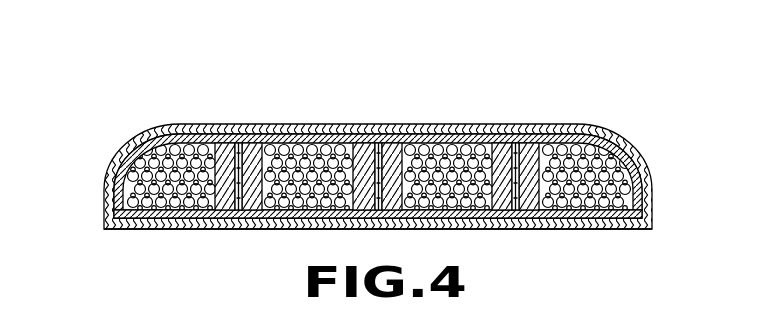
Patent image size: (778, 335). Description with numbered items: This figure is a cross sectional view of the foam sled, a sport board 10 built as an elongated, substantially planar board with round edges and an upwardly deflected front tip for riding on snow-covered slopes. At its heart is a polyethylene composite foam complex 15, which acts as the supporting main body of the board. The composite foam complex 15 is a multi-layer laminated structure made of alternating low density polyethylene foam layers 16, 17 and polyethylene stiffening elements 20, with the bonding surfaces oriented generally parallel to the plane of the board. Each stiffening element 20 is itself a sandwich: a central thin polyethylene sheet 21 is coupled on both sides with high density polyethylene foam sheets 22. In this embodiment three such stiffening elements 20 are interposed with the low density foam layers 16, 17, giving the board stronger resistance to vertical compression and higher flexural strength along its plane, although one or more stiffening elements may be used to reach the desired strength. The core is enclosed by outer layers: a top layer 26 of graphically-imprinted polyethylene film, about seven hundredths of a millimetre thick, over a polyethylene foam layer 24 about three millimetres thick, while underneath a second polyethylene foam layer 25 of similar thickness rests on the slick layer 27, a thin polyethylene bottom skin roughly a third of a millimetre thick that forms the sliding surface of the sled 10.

The sport board 10 is at (107, 152).
The polyethylene composite foam complex 15 is at (245, 143).
The low density polyethylene foam layer 16 is at (292, 182).
The low density polyethylene foam layer 17 is at (182, 190).
The polyethylene stiffening element 20 is at (430, 50).
The polyethylene sheet 21 is at (352, 143).
The high density polyethylene foam sheet 22 is at (393, 143).
The polyethylene foam layer 24 is at (515, 137).
The polyethylene foam layer 25 is at (558, 212).
The top layer 26 is at (602, 132).
The slick layer 27 is at (613, 225).